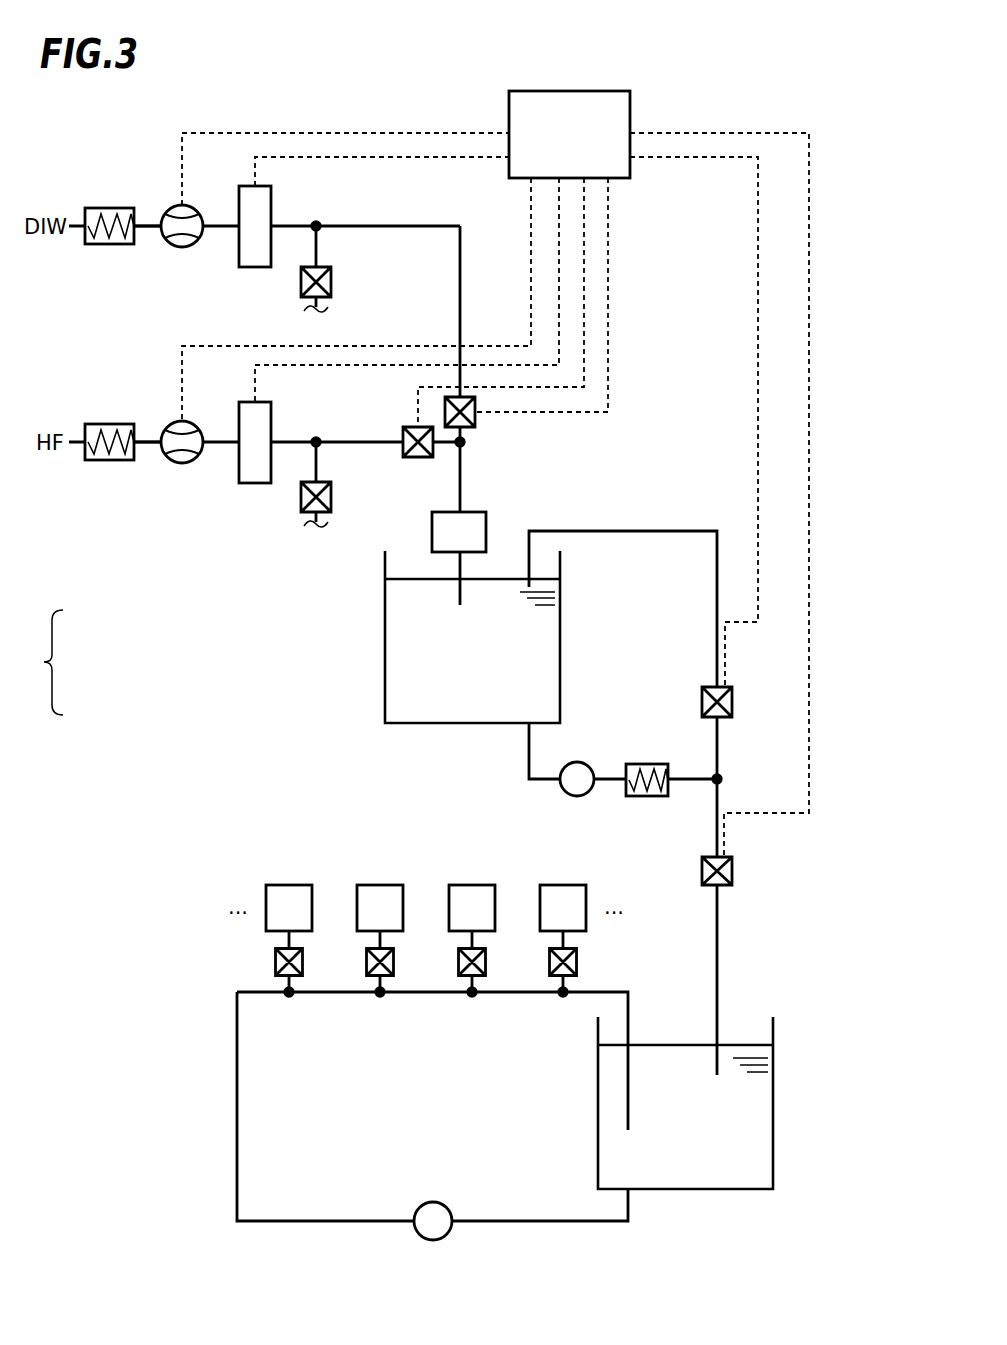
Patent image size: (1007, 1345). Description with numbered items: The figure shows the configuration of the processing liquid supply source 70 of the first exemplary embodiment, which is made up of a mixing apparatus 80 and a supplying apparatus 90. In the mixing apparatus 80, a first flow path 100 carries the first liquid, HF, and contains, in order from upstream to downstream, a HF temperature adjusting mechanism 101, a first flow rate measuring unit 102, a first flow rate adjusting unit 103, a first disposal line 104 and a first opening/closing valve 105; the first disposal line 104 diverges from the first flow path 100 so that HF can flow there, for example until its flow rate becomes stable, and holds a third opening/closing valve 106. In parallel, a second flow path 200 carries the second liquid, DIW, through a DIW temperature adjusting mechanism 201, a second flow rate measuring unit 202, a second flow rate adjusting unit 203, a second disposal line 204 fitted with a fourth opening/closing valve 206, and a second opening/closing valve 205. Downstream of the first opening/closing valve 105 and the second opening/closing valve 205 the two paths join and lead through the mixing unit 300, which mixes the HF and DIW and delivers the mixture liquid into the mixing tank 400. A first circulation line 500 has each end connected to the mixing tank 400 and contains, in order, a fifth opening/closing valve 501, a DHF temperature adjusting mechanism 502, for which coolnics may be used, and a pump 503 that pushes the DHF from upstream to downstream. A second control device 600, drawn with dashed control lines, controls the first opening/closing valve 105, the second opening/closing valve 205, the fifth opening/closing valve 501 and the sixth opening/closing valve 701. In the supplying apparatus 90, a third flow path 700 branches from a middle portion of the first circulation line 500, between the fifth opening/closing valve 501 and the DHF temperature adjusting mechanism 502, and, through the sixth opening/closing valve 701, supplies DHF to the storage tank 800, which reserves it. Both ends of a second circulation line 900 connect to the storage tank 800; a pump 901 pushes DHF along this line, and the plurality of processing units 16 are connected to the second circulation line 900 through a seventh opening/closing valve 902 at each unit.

The processing unit 16 is at (563, 885).
The processing liquid supply source 70 is at (38, 662).
The mixing apparatus 80 is at (122, 605).
The supplying apparatus 90 is at (122, 718).
The first flow path 100 is at (150, 442).
The HF temperature adjusting mechanism 101 is at (112, 424).
The first flow rate measuring unit 102 is at (182, 463).
The first flow rate adjusting unit 103 is at (255, 483).
The first disposal line 104 is at (318, 470).
The first opening/closing valve 105 is at (405, 427).
The third opening/closing valve 106 is at (332, 497).
The second flow path 200 is at (150, 226).
The DIW temperature adjusting mechanism 201 is at (112, 208).
The second flow rate measuring unit 202 is at (182, 247).
The second flow rate adjusting unit 203 is at (255, 267).
The second disposal line 204 is at (318, 253).
The second opening/closing valve 205 is at (475, 420).
The fourth opening/closing valve 206 is at (332, 282).
The mixing unit 300 is at (469, 512).
The mixing tank 400 is at (385, 645).
The first circulation line 500 is at (636, 531).
The fifth opening/closing valve 501 is at (732, 702).
The DHF temperature adjusting mechanism 502 is at (647, 764).
The pump 503 is at (577, 762).
The second control device 600 is at (630, 103).
The third flow path 700 is at (717, 825).
The sixth opening/closing valve 701 is at (732, 871).
The storage tank 800 is at (773, 1120).
The second circulation line 900 is at (237, 1113).
The pump 901 is at (433, 1202).
The seventh opening/closing valve 902 is at (549, 962).